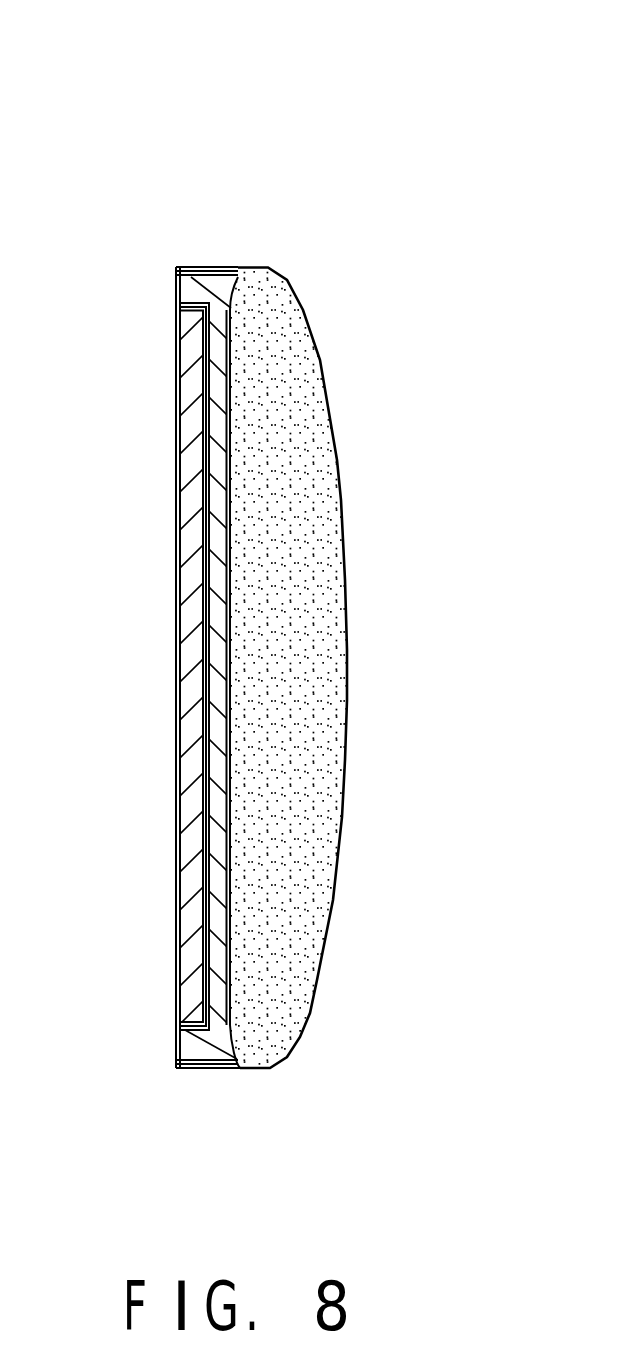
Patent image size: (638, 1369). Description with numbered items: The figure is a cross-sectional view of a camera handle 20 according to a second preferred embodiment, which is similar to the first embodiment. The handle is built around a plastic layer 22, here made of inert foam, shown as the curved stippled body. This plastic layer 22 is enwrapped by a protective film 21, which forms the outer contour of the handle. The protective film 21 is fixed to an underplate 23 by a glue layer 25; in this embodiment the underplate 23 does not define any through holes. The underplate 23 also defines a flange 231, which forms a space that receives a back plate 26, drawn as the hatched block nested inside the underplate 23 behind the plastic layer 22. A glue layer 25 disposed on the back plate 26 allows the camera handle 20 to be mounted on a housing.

The camera handle 20 is at (263, 34).
The protective film 21 is at (328, 407).
The plastic layer 22 is at (303, 665).
The underplate 23 is at (218, 780).
The flange 231 is at (188, 1047).
The glue layer 25 is at (210, 268).
The back plate 26 is at (188, 358).